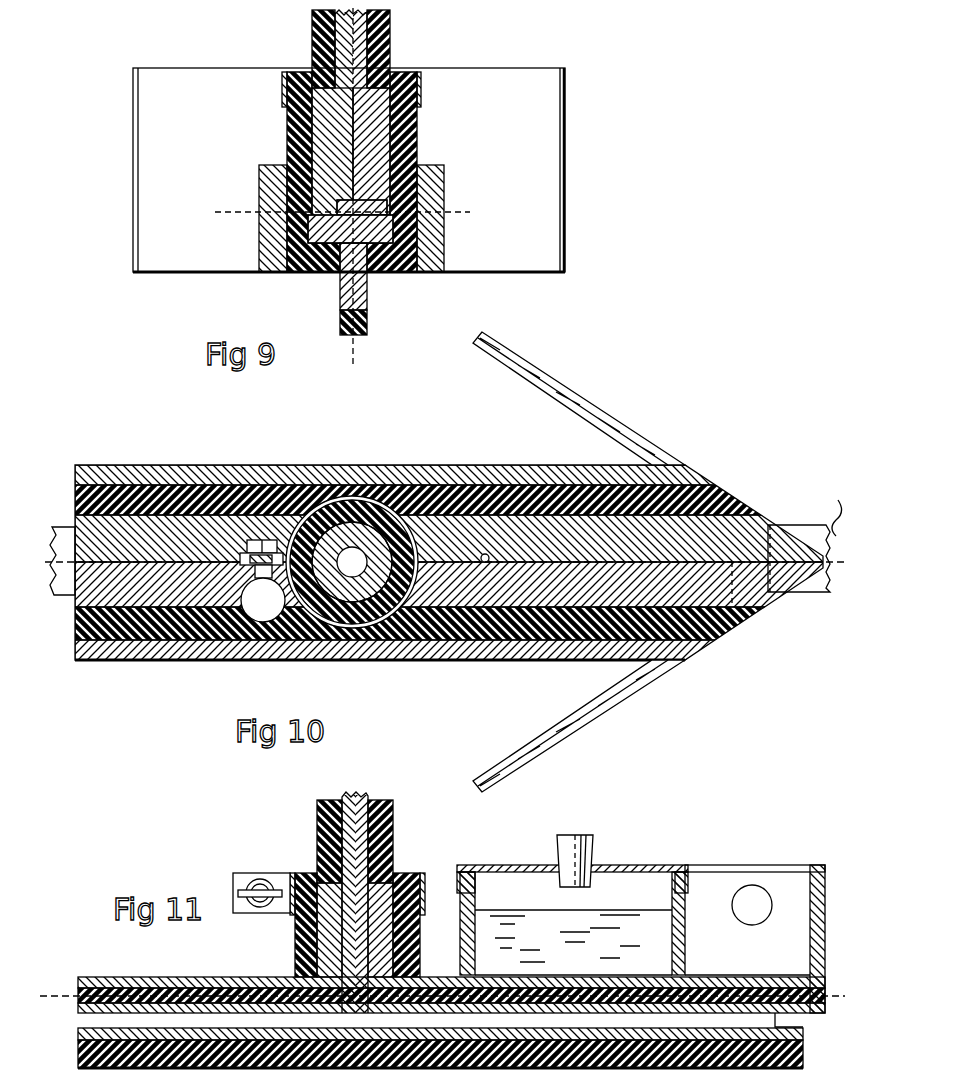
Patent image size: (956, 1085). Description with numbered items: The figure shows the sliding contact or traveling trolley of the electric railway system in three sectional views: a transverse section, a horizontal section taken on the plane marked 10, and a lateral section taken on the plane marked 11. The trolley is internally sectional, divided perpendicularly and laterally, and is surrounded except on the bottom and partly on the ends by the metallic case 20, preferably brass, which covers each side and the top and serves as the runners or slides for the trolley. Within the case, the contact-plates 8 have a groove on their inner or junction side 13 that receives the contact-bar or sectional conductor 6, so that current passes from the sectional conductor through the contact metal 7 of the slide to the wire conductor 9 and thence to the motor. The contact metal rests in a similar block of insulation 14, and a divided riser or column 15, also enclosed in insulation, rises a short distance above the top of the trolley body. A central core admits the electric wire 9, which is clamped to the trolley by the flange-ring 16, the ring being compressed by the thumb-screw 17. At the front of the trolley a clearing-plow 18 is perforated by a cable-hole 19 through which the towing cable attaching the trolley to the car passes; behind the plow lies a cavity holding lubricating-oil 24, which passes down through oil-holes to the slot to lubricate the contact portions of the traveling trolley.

In FIG. 9, the contact-bar or sectional conductor 6 is at (360, 299).
In FIG. 10, the contact-bar or sectional conductor 6 is at (440, 566).
In FIG. 9, the contact metal 7 is at (408, 232).
In FIG. 9, the contact-plates (contact slide or trolley) 8 is at (392, 56).
In FIG. 10, the contact-plates (contact slide or trolley) 8 is at (741, 526).
In FIG. 11, the contact-plates (contact slide or trolley) 8 is at (688, 966).
In FIG. 9, the wire conductor 9 is at (370, 13).
In FIG. 10, the wire conductor 9 is at (356, 552).
In FIG. 11, the wire conductor 9 is at (346, 796).
In FIG. 9, the section line 10 10 is at (360, 211).
In FIG. 11, the section line 10 10 is at (447, 998).
In FIG. 9, the section line 11 11 is at (355, 197).
In FIG. 10, the section line 11 11 is at (449, 564).
In FIG. 9, the inner or junction side groove 13 is at (400, 201).
In FIG. 10, the inner or junction side groove 13 is at (827, 505).
In FIG. 9, the block of insulation 14 is at (290, 133).
In FIG. 10, the block of insulation 14 is at (437, 500).
In FIG. 11, the divided riser or column 15 is at (381, 896).
In FIG. 9, the flange-ring 16 is at (284, 80).
In FIG. 10, the flange-ring 16 is at (401, 512).
In FIG. 11, the flange-ring 16 is at (291, 878).
In FIG. 10, the thumb-screw 17 is at (262, 581).
In FIG. 11, the thumb-screw 17 is at (251, 889).
In FIG. 9, the clearing-plow 18 is at (349, 170).
In FIG. 10, the clearing-plow 18 is at (609, 421).
In FIG. 11, the clearing-plow 18 is at (451, 966).
In FIG. 11, the cable-hole 19 is at (752, 905).
In FIG. 9, the metallic case of the trolley 20 is at (266, 259).
In FIG. 10, the metallic case of the trolley 20 is at (249, 470).
In FIG. 11, the metallic case of the trolley 20 is at (192, 981).
In FIG. 11, the lubricating-oil cavity 24 is at (573, 927).